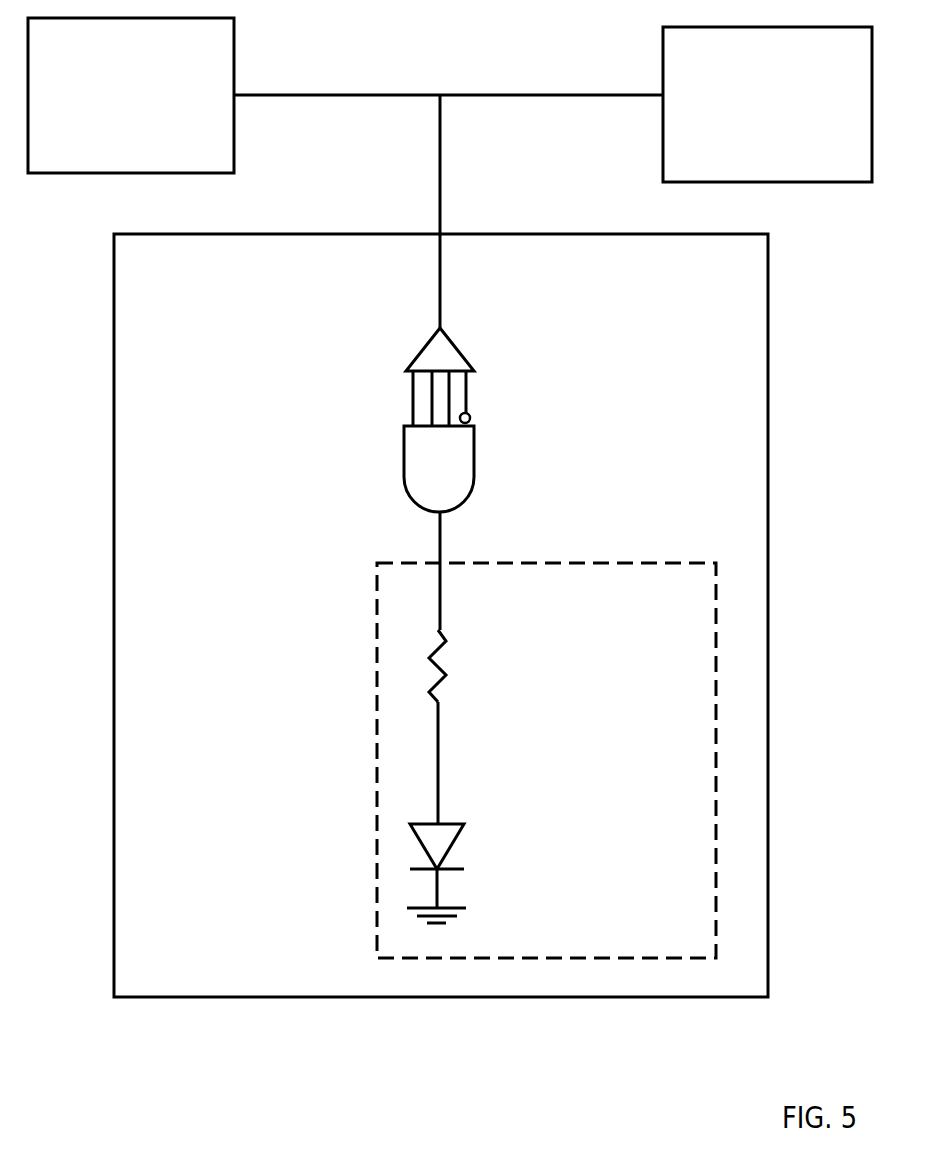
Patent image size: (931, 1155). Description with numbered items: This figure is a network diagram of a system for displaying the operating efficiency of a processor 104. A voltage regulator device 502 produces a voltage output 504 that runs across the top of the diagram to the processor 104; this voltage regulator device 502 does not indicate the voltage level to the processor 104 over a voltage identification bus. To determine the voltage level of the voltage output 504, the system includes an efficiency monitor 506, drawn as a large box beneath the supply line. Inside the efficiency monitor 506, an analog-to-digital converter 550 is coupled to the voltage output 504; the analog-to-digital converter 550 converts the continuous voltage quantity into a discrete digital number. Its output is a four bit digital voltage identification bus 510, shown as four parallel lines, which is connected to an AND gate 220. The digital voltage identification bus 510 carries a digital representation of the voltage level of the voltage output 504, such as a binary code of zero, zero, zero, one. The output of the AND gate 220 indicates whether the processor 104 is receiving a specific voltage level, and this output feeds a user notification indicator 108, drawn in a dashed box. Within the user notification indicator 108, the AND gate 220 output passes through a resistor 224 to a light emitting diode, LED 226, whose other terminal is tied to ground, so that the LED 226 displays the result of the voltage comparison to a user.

The voltage regulator device 502 is at (147, 132).
The voltage output 504 is at (362, 86).
The processor 104 is at (782, 128).
The efficiency monitor 506 is at (249, 300).
The analog-to-digital converter 550 is at (462, 333).
The digital voltage identification bus 510 is at (393, 414).
The AND gate 220 is at (603, 492).
The user notification indicator 108 is at (610, 626).
The resistor 224 is at (503, 706).
The LED 226 is at (572, 886).